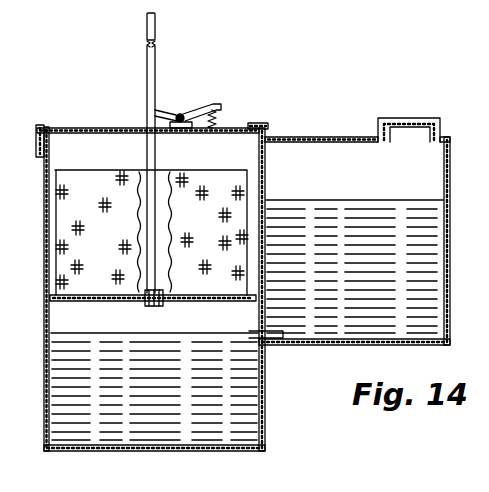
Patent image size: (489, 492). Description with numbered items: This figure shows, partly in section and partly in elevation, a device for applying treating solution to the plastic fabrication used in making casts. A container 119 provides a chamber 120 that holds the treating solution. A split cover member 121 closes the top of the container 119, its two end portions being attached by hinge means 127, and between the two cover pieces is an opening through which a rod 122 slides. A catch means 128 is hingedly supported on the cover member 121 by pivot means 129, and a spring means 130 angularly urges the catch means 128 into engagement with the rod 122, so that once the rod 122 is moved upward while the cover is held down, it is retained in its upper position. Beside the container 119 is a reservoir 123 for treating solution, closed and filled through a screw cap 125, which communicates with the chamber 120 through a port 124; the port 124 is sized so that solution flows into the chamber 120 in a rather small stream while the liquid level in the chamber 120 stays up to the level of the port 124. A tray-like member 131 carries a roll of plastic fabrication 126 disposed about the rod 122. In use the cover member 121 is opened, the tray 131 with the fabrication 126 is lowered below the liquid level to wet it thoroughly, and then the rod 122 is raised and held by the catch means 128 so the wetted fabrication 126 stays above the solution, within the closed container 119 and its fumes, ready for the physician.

The container 119 is at (46, 292).
The chamber 120 is at (248, 398).
The split cover member 121 is at (83, 128).
The rod 122 is at (165, 37).
The reservoir 123 is at (425, 174).
The port 124 is at (268, 339).
The screw cap 125 is at (408, 120).
The roll of plastic fabrication 126 is at (90, 181).
The hinge means 127 is at (40, 128).
The catch means 128 is at (165, 110).
The pivot means 129 is at (186, 110).
The spring means 130 is at (218, 123).
The tray-like member 131 is at (85, 297).